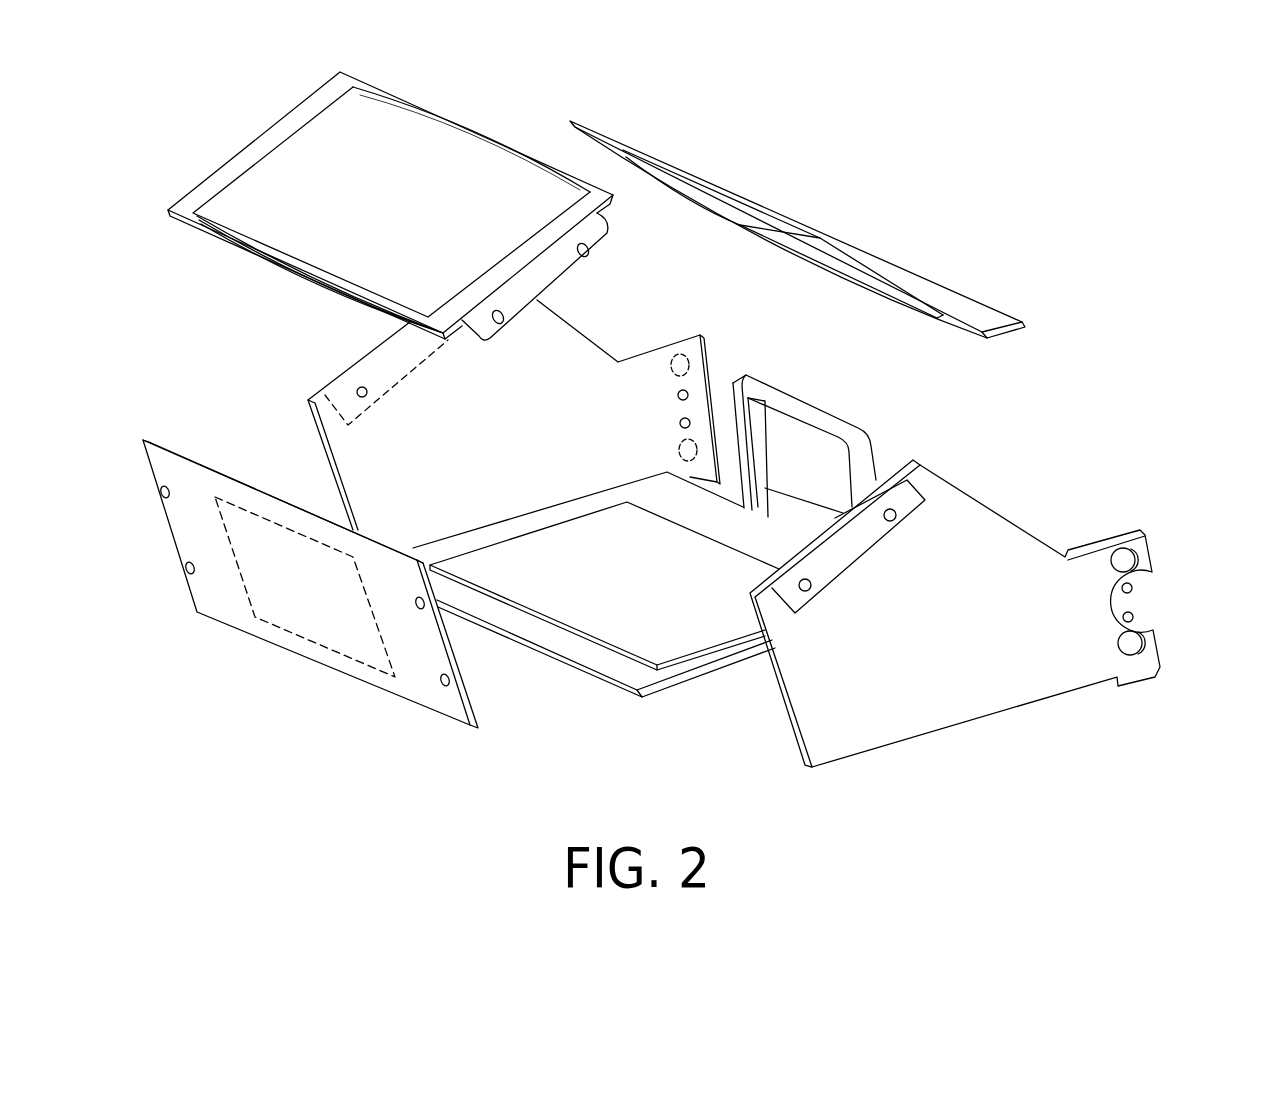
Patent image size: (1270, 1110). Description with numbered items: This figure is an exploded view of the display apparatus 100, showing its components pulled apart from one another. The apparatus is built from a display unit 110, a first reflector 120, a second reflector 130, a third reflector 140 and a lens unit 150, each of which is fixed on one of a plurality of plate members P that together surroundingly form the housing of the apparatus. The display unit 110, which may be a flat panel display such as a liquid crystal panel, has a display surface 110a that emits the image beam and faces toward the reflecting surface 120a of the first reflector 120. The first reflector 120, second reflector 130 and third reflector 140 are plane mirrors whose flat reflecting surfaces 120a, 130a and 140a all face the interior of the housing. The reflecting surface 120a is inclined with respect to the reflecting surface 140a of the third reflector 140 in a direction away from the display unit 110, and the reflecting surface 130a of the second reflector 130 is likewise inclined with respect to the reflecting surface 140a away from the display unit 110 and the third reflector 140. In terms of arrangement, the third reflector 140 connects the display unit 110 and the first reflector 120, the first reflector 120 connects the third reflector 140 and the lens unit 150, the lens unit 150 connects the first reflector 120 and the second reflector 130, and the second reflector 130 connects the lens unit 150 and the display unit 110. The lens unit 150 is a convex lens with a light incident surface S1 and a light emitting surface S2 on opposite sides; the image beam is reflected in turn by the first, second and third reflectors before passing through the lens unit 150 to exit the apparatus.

The display apparatus 100 is at (705, 415).
The display unit 110 is at (862, 440).
The display surface 110a is at (807, 454).
The first reflector 120 is at (310, 575).
The reflecting surface 120a is at (298, 565).
The second reflector 130 is at (797, 240).
The reflecting surface 130a is at (813, 255).
The third reflector 140 is at (596, 614).
The reflecting surface 140a is at (577, 593).
The lens unit 150 is at (390, 187).
The light incident surface S1 is at (290, 273).
The light emitting surface S2 is at (393, 153).
The plate members P is at (225, 177).